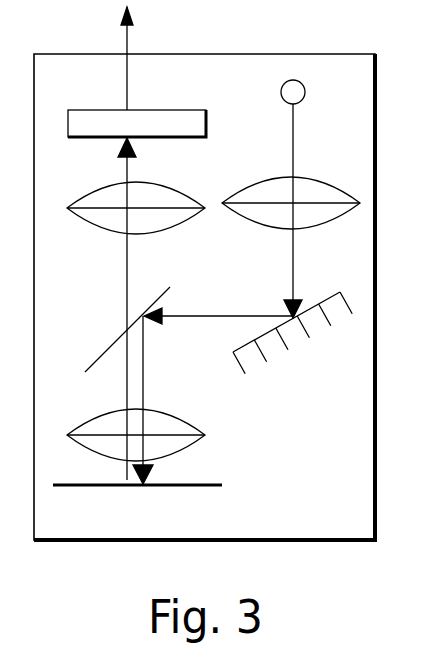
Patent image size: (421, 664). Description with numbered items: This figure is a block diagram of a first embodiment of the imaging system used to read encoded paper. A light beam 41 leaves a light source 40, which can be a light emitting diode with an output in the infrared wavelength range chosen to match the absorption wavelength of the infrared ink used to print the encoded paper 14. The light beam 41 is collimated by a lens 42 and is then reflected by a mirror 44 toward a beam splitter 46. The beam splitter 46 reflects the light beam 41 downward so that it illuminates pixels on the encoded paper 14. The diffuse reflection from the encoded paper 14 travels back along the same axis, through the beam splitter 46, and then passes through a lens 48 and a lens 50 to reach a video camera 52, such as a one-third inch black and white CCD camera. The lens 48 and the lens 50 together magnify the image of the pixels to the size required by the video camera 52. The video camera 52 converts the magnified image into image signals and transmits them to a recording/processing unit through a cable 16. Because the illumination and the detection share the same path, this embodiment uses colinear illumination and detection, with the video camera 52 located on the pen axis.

The encoded paper 14 is at (200, 482).
The cable 16 is at (127, 40).
The light source 40 is at (281, 95).
The light beam 41 is at (293, 160).
The lens 42 is at (325, 182).
The mirror 44 is at (248, 343).
The beam splitter 46 is at (162, 300).
The lens 48 is at (177, 413).
The lens 50 is at (178, 190).
The video camera 52 is at (97, 110).